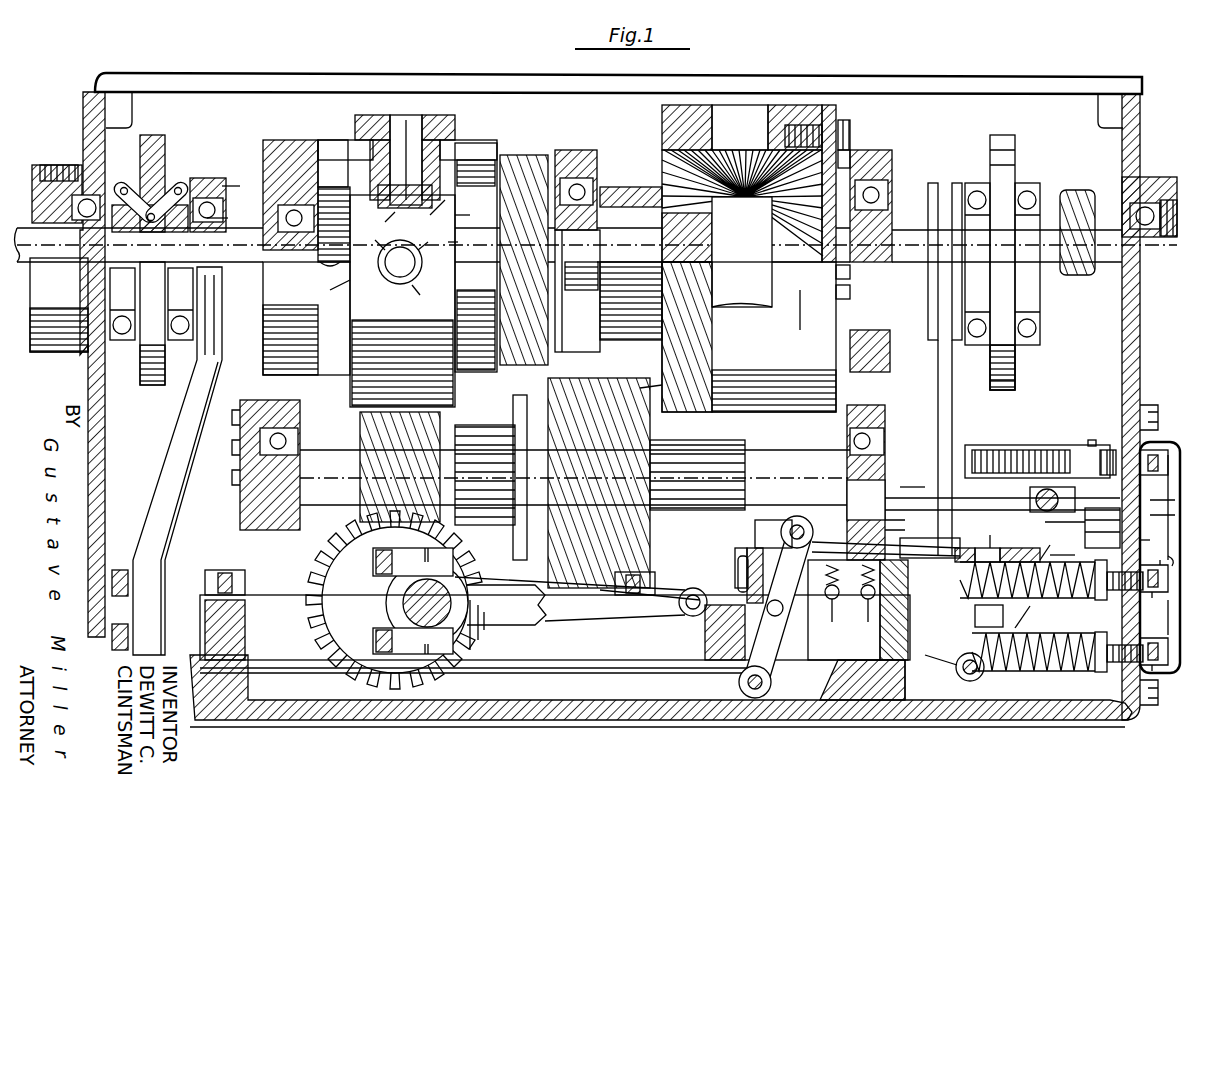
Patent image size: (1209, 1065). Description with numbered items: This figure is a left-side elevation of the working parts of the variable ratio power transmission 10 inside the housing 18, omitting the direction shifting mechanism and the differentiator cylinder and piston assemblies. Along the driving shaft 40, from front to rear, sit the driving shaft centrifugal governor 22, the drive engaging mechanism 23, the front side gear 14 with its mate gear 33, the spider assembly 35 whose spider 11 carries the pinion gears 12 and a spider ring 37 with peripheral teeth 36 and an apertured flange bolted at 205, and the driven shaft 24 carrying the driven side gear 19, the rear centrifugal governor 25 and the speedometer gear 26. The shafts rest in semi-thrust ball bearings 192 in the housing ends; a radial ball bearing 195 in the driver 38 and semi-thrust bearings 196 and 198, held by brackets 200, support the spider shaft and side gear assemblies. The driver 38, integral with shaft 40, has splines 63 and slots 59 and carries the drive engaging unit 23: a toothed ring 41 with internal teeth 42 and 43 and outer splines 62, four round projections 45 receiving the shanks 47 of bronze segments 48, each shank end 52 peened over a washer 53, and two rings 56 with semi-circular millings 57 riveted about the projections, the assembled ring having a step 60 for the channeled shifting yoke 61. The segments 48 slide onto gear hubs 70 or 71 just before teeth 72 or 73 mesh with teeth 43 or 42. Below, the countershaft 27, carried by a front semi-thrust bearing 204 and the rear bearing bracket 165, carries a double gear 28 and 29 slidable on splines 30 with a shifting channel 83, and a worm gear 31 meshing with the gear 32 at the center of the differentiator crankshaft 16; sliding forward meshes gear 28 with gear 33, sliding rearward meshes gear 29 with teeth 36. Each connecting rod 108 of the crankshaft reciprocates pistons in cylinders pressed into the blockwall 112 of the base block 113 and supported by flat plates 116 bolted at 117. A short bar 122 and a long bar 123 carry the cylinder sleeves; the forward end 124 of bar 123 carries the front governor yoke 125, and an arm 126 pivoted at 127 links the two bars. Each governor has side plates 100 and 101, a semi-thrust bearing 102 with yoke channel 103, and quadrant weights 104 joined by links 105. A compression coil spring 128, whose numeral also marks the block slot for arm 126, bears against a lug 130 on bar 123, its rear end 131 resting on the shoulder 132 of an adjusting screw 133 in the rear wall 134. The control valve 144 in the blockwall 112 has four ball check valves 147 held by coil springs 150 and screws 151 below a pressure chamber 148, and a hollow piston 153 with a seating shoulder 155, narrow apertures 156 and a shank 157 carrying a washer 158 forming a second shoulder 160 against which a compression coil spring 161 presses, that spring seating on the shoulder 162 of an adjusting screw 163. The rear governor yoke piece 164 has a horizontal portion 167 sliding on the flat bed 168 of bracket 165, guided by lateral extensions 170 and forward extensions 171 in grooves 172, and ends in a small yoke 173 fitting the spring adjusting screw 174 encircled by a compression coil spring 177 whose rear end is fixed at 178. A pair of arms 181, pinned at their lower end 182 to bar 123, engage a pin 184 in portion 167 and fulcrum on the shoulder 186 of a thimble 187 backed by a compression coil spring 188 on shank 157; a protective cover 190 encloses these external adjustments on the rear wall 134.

The housing 10 is at (180, 59).
The hub 11 is at (727, 283).
The bevel gear 12 is at (725, 205).
The gear plate 14 is at (662, 170).
The worm wheel hub 16 is at (403, 607).
The base plate 18 is at (598, 731).
The gear flange 19 is at (804, 320).
The coupling 22 is at (577, 251).
The bearing block 23 is at (309, 122).
The shaft 24 is at (895, 232).
The disc 25 is at (1022, 128).
The worm 26 is at (1070, 190).
The lower shaft 27 is at (320, 452).
The link 28 is at (600, 560).
The helical gear 29 is at (652, 540).
The pinion 30 is at (476, 515).
The worm 31 is at (362, 465).
The worm wheel 32 is at (348, 534).
The helical gear 33 is at (546, 364).
The gear 35 is at (613, 348).
The gear teeth 36 is at (637, 391).
The gear 37 is at (739, 355).
The gear 38 is at (266, 346).
The input shaft 40 is at (54, 258).
The pin 41 is at (436, 182).
The gear teeth 42 is at (334, 215).
The spring 43 is at (443, 212).
The plate 45 is at (345, 149).
The plate 47 is at (468, 149).
The pawl 48 is at (380, 223).
The roller 52 is at (433, 239).
The pin 53 is at (368, 239).
The bushing 56 is at (356, 130).
The pin 57 is at (424, 301).
The disc 59 is at (498, 152).
The clutch gear 60 is at (393, 255).
The cap 61 is at (390, 114).
The pin 62 is at (462, 239).
The collar 63 is at (318, 152).
The ring 70 is at (463, 214).
The pin 71 is at (330, 282).
The disc 72 is at (490, 290).
The flange 73 is at (325, 262).
The disc 83 is at (531, 477).
The bearing housing 100 is at (112, 296).
The bearing 101 is at (170, 336).
The bearing 102 is at (214, 214).
The bearing plate 103 is at (220, 186).
The disc 104 is at (168, 150).
The link 105 is at (126, 186).
The arm 108 is at (642, 588).
The base 112 is at (898, 678).
The base plate 113 is at (208, 612).
The block 116 is at (755, 540).
The pin 117 is at (740, 550).
The bar 122 is at (860, 538).
The plate 123 is at (668, 672).
The bolt 124 is at (124, 662).
The lever 125 is at (214, 360).
The pivot 126 is at (772, 684).
The pin 127 is at (776, 600).
The spring 128 is at (1015, 665).
The link 130 is at (950, 678).
The plate 131 is at (1092, 670).
The bolt 132 is at (1100, 672).
The tab 133 is at (1160, 695).
The cover 134 is at (1160, 557).
The block 144 is at (886, 610).
The lever 147 is at (792, 604).
The pin block 148 is at (846, 615).
The link 150 is at (830, 556).
The pivot 151 is at (812, 536).
The bar 153 is at (930, 540).
The bracket 155 is at (973, 545).
The bracket 156 is at (958, 546).
The link 157 is at (1032, 544).
The rod 158 is at (1068, 545).
The spring 160 is at (1040, 596).
The plate 161 is at (1084, 596).
The bracket 162 is at (1102, 524).
The nut 163 is at (1152, 615).
The plate 164 is at (938, 371).
The bearing block 165 is at (892, 415).
The rod 167 is at (1065, 521).
The bracket 168 is at (1030, 492).
The cover 170 is at (1160, 533).
The rod 171 is at (908, 486).
The rod 172 is at (890, 498).
The block 173 is at (1094, 463).
The tab 174 is at (1160, 455).
The solenoid 177 is at (1022, 445).
The terminal 178 is at (1092, 440).
The link 181 is at (1032, 615).
The pivot 182 is at (982, 680).
The screw 184 is at (1060, 497).
The block 186 is at (996, 616).
The bracket 187 is at (1015, 546).
The pin 188 is at (997, 529).
The cover wall 190 is at (1158, 553).
The bearing housing 192 is at (86, 170).
The bearing 195 is at (241, 182).
The bearing block 196 is at (578, 184).
The bearing block 198 is at (866, 180).
The set screw 200 is at (612, 175).
The nut 204 is at (836, 118).
The nut 205 is at (852, 128).